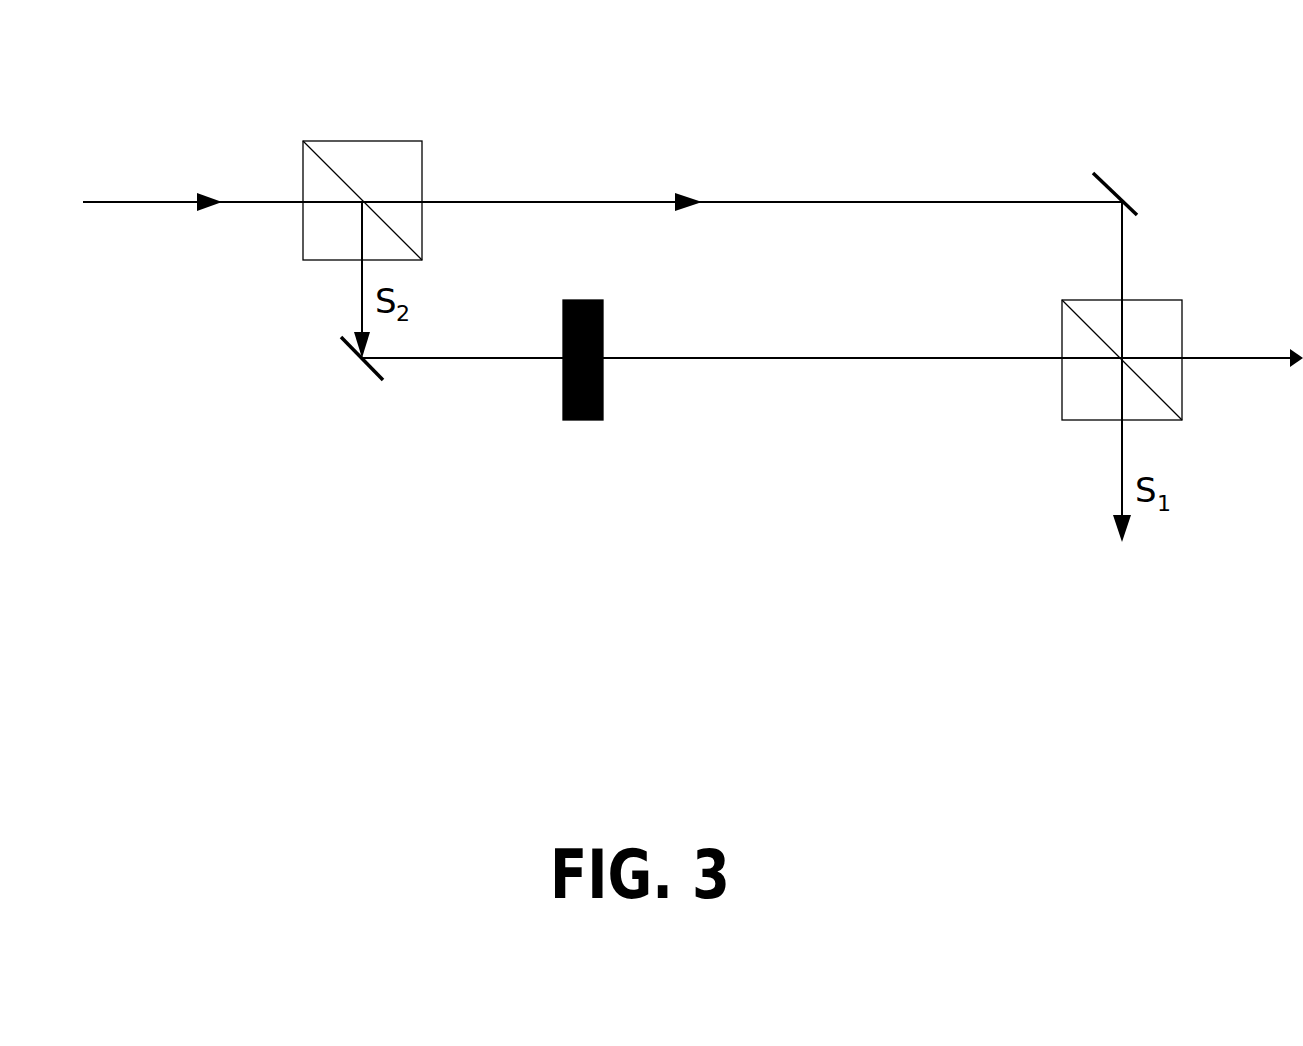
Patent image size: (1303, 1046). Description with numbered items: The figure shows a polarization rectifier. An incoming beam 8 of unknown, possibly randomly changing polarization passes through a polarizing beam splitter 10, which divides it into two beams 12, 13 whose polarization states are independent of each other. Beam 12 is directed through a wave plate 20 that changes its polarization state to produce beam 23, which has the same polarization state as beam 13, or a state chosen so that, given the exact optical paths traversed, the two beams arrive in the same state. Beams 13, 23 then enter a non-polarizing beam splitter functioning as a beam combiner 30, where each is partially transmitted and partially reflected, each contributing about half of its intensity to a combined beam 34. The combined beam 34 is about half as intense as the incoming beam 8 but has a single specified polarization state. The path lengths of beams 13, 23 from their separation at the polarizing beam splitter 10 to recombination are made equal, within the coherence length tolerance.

The incoming beam 8 is at (262, 202).
The polarizing beam splitter 10 is at (382, 140).
The beam 12 is at (487, 359).
The beam 13 is at (838, 200).
The wave plate 20 is at (583, 420).
The beam 23 is at (833, 360).
The beam combiner 30 is at (1158, 298).
The combined beam 34 is at (1202, 358).